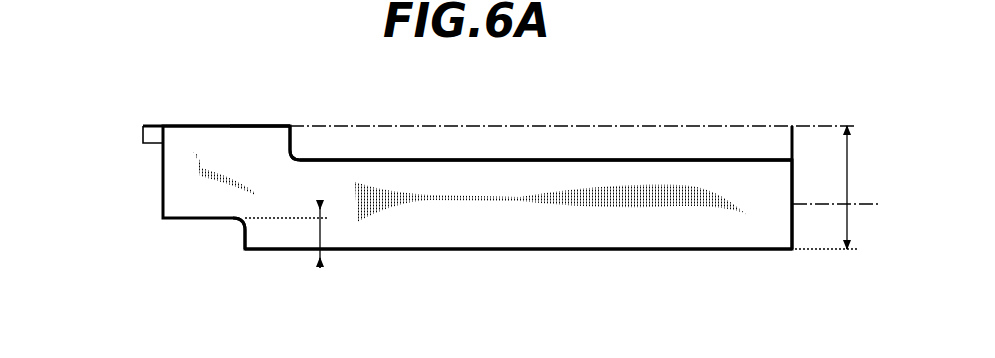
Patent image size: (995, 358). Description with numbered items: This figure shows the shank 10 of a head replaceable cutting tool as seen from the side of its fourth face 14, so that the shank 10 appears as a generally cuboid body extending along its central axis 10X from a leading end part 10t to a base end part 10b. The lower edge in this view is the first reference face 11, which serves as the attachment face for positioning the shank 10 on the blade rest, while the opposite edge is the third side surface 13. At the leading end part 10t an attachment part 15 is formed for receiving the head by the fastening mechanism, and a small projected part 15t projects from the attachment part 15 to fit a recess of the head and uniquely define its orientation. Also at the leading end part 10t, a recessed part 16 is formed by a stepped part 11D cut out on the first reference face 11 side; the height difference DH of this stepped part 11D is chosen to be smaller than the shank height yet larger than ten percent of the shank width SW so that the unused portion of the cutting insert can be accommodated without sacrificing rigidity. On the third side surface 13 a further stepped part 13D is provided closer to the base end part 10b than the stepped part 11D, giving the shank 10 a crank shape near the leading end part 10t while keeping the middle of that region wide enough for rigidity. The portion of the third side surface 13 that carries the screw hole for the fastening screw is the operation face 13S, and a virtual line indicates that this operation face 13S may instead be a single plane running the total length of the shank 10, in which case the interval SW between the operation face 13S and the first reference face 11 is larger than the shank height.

The shank 10 is at (124, 102).
The leading end part 10t is at (193, 107).
The base end part 10b is at (776, 118).
The central axis 10X is at (862, 207).
The first reference face 11 is at (609, 253).
The stepped part 11D is at (242, 253).
The third side surface 13 is at (318, 92).
The operation face 13S is at (236, 122).
The stepped part 13D is at (315, 117).
The fourth face 14 is at (487, 210).
The attachment part 15 is at (160, 178).
The projected part 15t is at (143, 137).
The recessed part 16 is at (203, 267).
The difference in height DH is at (304, 234).
The shank width SW is at (843, 187).